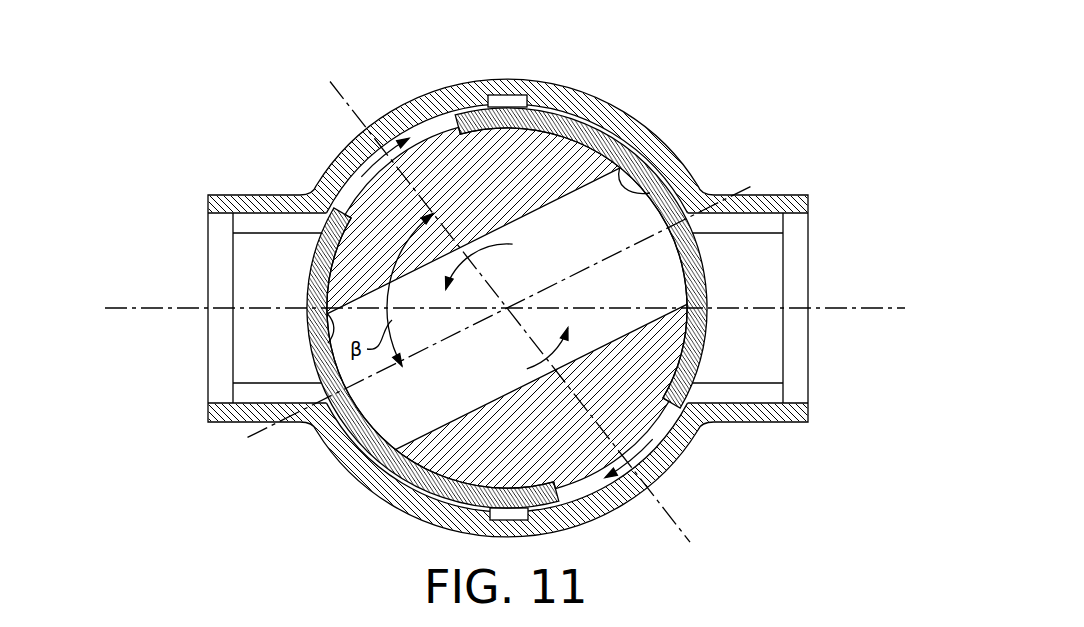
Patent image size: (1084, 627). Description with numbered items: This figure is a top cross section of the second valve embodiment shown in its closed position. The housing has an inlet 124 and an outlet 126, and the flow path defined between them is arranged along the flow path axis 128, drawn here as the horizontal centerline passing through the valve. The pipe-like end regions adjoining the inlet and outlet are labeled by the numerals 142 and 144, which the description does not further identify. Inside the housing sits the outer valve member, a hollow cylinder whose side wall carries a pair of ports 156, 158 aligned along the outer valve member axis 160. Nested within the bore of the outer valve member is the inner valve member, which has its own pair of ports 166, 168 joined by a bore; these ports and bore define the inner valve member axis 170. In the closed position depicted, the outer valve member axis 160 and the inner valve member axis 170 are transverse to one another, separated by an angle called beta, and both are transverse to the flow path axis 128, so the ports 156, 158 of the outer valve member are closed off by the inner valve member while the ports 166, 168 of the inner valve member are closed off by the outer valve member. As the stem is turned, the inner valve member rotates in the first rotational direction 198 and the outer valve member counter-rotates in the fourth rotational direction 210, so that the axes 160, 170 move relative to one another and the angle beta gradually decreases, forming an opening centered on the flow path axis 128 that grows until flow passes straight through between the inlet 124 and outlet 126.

The inlet 124 is at (772, 423).
The outlet 126 is at (243, 195).
The flow path axis 128 is at (857, 312).
The second fluid port 142 is at (770, 232).
The first fluid port 144 is at (262, 230).
The port of the outer valve member 156 is at (428, 92).
The port of the outer valve member 158 is at (688, 428).
The outer valve member axis 160 is at (686, 540).
The port of the inner valve member 166 is at (325, 358).
The port of the inner valve member 168 is at (650, 180).
The inner valve member axis 170 is at (752, 190).
The first rotational direction 198 is at (505, 245).
The fourth rotational direction 210 is at (377, 175).